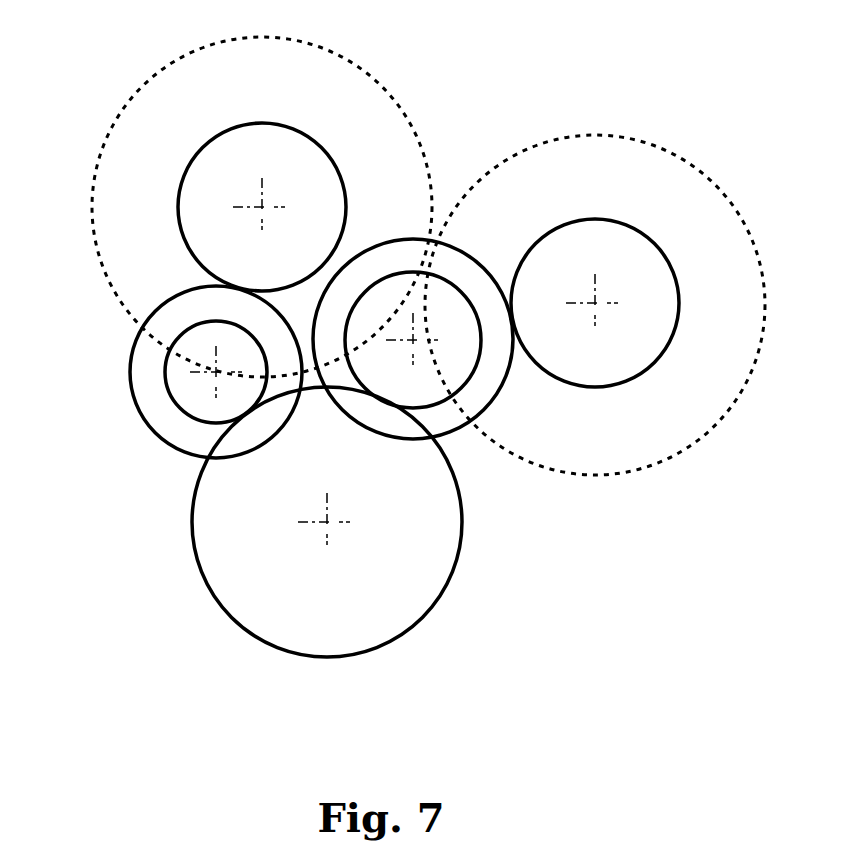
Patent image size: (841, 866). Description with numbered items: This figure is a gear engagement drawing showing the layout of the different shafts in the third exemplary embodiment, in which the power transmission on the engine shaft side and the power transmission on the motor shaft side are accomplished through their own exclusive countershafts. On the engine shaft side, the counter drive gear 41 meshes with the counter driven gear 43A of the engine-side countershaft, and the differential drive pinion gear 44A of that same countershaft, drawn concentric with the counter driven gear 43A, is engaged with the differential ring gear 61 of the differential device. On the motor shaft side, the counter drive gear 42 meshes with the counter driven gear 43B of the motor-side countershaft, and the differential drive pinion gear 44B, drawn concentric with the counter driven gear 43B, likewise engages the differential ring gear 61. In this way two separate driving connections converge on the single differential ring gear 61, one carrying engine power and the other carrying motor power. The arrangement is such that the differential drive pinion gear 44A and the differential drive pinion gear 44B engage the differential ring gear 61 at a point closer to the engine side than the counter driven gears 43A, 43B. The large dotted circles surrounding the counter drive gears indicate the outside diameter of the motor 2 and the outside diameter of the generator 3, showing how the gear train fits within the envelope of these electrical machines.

The motor 2 is at (400, 91).
The generator 3 is at (630, 133).
The counter drive gear 41 is at (681, 304).
The counter drive gear 42 is at (346, 178).
The counter driven gear 43A is at (486, 413).
The differential drive pinion gear 44A is at (455, 287).
The counter driven gear 43B is at (131, 374).
The differential drive pinion gear 44B is at (177, 410).
The differential ring gear 61 is at (463, 521).